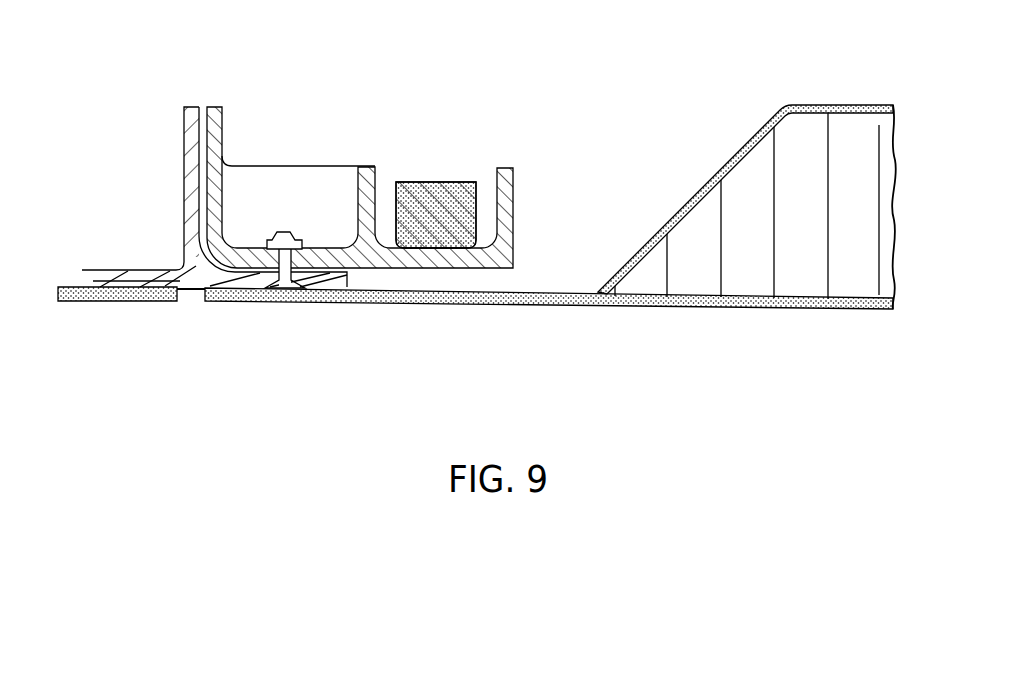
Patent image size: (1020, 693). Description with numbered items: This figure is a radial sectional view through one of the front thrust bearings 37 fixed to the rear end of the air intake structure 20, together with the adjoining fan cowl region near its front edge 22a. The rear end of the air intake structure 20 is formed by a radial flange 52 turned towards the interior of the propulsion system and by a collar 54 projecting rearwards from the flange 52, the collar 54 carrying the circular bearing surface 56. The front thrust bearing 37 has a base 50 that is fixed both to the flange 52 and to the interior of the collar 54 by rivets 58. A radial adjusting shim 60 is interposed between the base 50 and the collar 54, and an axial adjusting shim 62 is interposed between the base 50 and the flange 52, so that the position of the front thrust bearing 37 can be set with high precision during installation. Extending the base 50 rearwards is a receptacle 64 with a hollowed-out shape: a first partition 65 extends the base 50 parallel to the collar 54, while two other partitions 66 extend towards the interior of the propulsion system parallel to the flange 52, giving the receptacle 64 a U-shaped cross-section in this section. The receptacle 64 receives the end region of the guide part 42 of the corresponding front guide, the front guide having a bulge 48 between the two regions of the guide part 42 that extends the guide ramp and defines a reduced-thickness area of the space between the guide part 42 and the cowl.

The air intake structure 20 is at (125, 303).
The front edge 22a is at (193, 300).
The front thrust bearing 37 is at (337, 167).
The guide part 42 is at (442, 200).
The bulge 48 is at (432, 280).
The base 50 is at (217, 137).
The radial flange 52 is at (193, 128).
The collar 54 is at (292, 288).
The circular bearing surface 56 is at (247, 300).
The rivet 58 is at (283, 232).
The radial adjusting shim 60 is at (340, 278).
The axial adjusting shim 62 is at (200, 212).
The receptacle 64 is at (485, 232).
The first partition 65 is at (498, 258).
The partition 66 is at (373, 175).